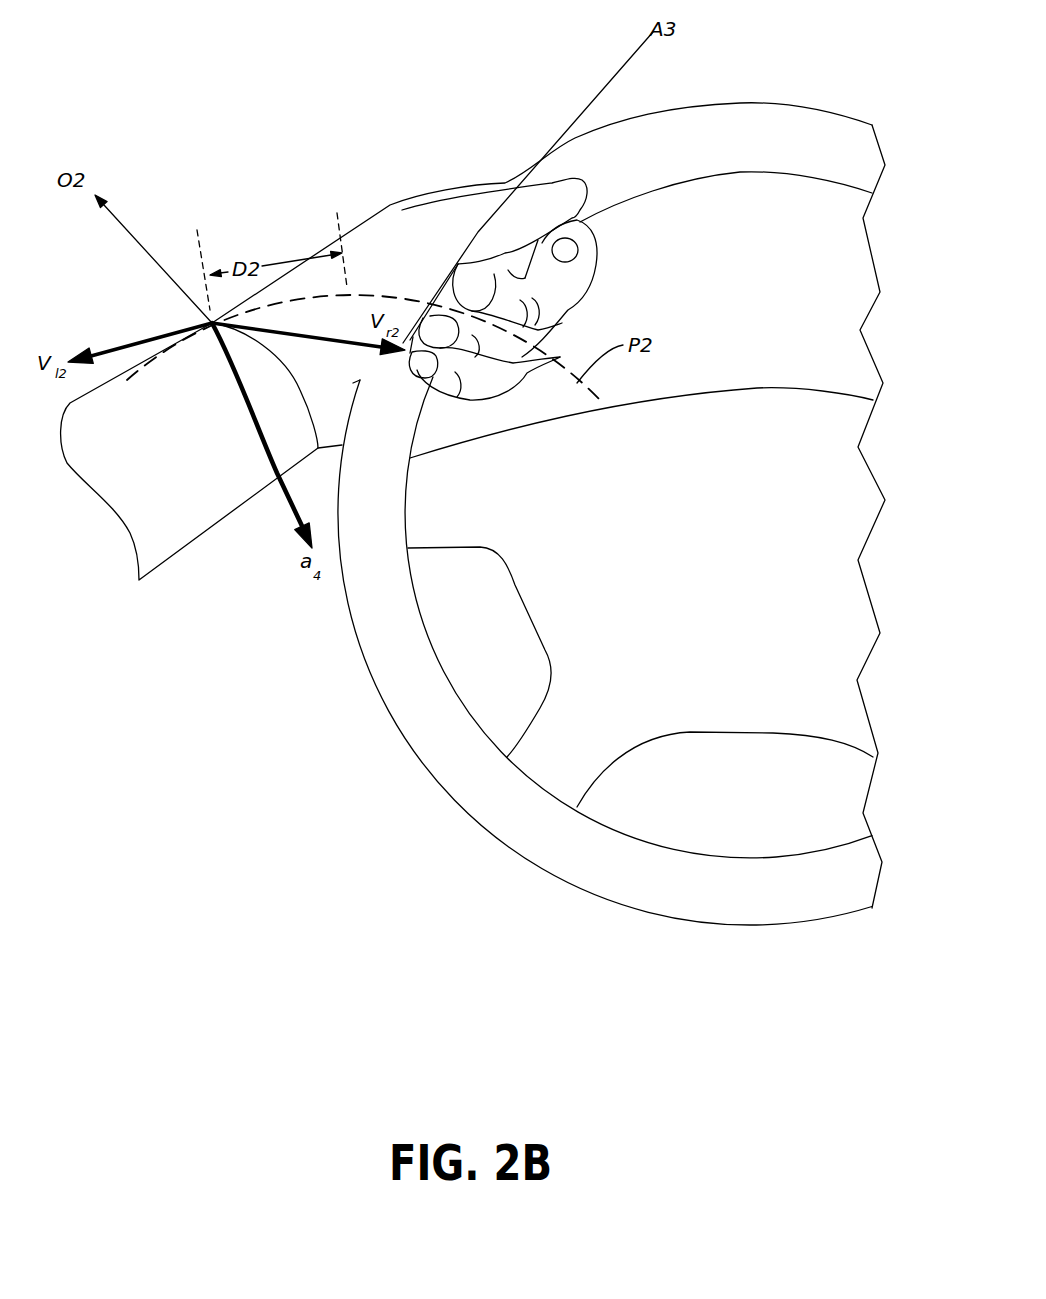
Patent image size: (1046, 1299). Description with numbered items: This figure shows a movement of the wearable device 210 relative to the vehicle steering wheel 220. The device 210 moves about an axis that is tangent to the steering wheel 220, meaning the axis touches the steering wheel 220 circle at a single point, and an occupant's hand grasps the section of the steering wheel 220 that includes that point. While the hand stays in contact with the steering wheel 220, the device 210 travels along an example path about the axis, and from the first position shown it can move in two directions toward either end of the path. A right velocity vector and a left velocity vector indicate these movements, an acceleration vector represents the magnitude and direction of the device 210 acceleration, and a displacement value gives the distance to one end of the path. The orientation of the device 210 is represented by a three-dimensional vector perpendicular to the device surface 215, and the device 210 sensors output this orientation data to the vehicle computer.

The wearable device 210 is at (200, 320).
The device surface 215 is at (297, 436).
The steering wheel 220 is at (470, 822).